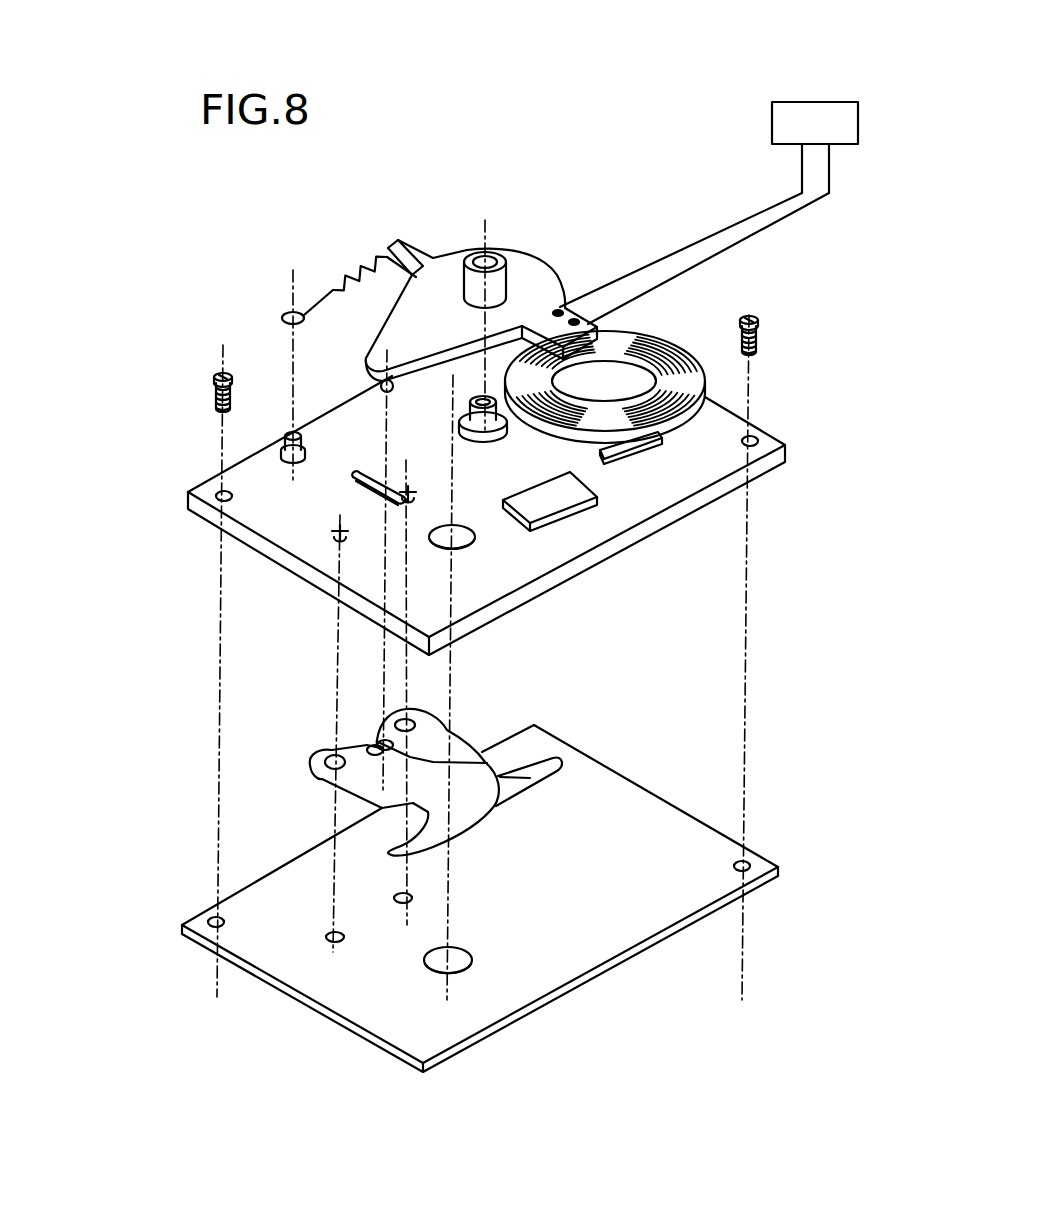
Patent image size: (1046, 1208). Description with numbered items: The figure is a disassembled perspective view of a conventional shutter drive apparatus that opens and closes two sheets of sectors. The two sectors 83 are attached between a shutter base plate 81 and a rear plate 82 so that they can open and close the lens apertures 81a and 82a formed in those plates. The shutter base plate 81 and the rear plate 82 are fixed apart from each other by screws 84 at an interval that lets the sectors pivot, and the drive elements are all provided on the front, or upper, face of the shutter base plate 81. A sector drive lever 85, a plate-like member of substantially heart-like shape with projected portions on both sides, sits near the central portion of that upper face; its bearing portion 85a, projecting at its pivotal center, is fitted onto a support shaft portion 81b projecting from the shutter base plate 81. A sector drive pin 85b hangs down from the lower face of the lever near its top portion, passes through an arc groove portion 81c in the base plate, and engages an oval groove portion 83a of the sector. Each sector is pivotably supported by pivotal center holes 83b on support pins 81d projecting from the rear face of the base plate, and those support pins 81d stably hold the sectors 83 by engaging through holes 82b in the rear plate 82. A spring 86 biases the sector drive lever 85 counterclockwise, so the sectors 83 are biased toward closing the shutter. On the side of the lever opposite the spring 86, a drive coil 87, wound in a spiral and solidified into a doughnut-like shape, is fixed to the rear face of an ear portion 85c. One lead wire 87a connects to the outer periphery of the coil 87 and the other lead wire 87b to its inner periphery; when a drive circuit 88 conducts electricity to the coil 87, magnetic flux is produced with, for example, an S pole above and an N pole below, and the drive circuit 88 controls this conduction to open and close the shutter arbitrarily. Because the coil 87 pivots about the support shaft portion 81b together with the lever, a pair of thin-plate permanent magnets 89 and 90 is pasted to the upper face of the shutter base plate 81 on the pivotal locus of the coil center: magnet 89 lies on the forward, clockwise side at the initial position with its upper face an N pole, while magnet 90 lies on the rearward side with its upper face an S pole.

The shutter base plate 81 is at (178, 507).
The lens aperture 81a is at (462, 546).
The support shaft portion 81b is at (468, 406).
The arc groove portion 81c is at (358, 478).
The support pins 81d is at (330, 537).
The rear plate 82 is at (176, 927).
The lens aperture 82a is at (474, 962).
The through holes 82b is at (398, 908).
The sectors 83 is at (298, 768).
The oval groove portion 83a is at (368, 746).
The pivotal center holes 83b is at (430, 720).
The screws 84 is at (212, 395).
The sector drive lever 85 is at (543, 254).
The bearing portion 85a is at (486, 252).
The sector drive pin 85b is at (380, 385).
The ear portion 85c is at (580, 316).
The spring 86 is at (338, 288).
The drive coil 87 is at (700, 337).
The lead wire 87a is at (752, 220).
The lead wire 87b is at (788, 224).
The drive circuit 88 is at (817, 100).
The permanent magnet 89 is at (585, 512).
The permanent magnet 90 is at (658, 456).